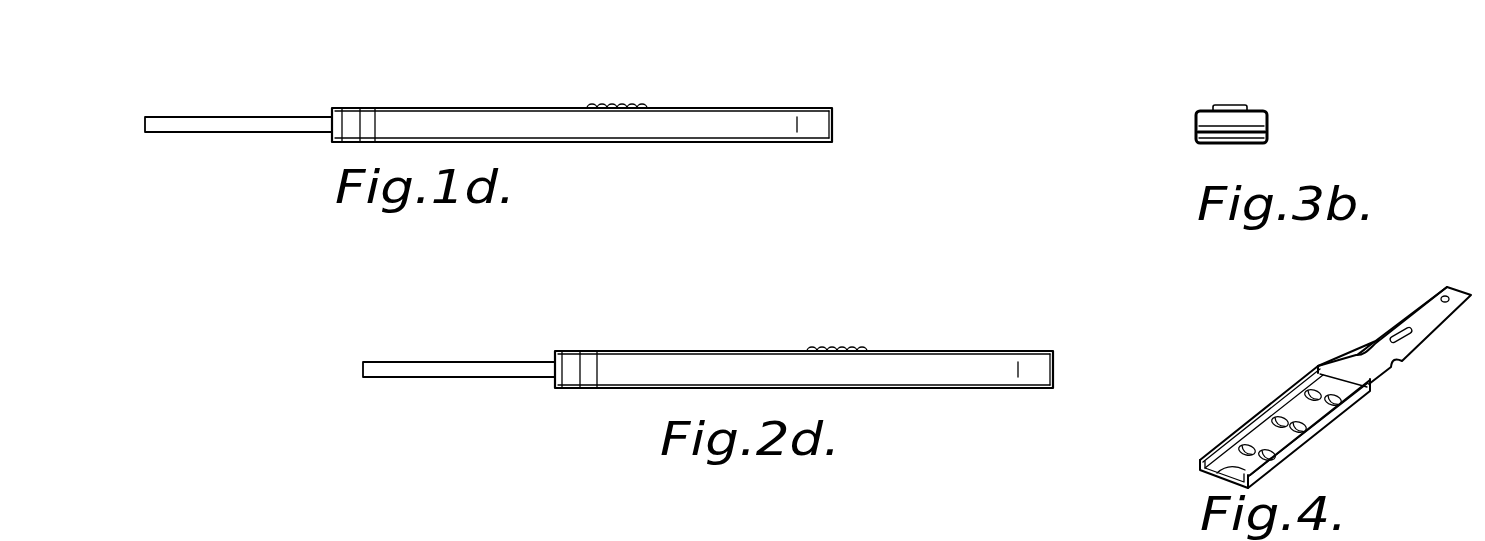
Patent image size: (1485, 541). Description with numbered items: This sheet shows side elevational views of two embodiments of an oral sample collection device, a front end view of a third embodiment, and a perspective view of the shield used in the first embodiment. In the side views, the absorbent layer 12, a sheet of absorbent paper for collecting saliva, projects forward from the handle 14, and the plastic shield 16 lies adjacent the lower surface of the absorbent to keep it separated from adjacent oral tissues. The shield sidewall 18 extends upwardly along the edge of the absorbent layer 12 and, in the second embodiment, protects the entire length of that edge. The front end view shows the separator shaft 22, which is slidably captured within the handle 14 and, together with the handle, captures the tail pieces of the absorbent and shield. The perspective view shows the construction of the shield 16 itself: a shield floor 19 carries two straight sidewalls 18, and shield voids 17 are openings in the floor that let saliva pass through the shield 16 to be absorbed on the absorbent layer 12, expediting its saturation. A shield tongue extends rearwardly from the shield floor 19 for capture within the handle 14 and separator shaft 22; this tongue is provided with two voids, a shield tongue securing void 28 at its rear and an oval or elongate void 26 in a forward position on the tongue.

In FIG. 3B, the absorbent layer 12 is at (1210, 129).
In FIG. 1D, the handle 14 is at (707, 118).
In FIG. 2D, the handle 14 is at (1035, 367).
In FIG. 3B, the handle 14 is at (1215, 145).
In FIG. 1D, the shield 16 is at (263, 150).
In FIG. 2D, the shield 16 is at (476, 389).
In FIG. 3B, the shield 16 is at (1270, 129).
In FIG. 4, the shield 16 is at (1180, 447).
In FIG. 4, the shield voids 17 is at (1283, 418).
In FIG. 1D, the shield sidewall 18 is at (168, 125).
In FIG. 2D, the shield sidewall 18 is at (373, 368).
In FIG. 4, the shield sidewall 18 is at (1297, 383).
In FIG. 4, the shield floor 19 is at (1200, 470).
In FIG. 3B, the separator shaft 22 is at (1230, 115).
In FIG. 4, the shield tongue elongate void 26 is at (1413, 334).
In FIG. 4, the shield tongue securing void 28 is at (1442, 296).